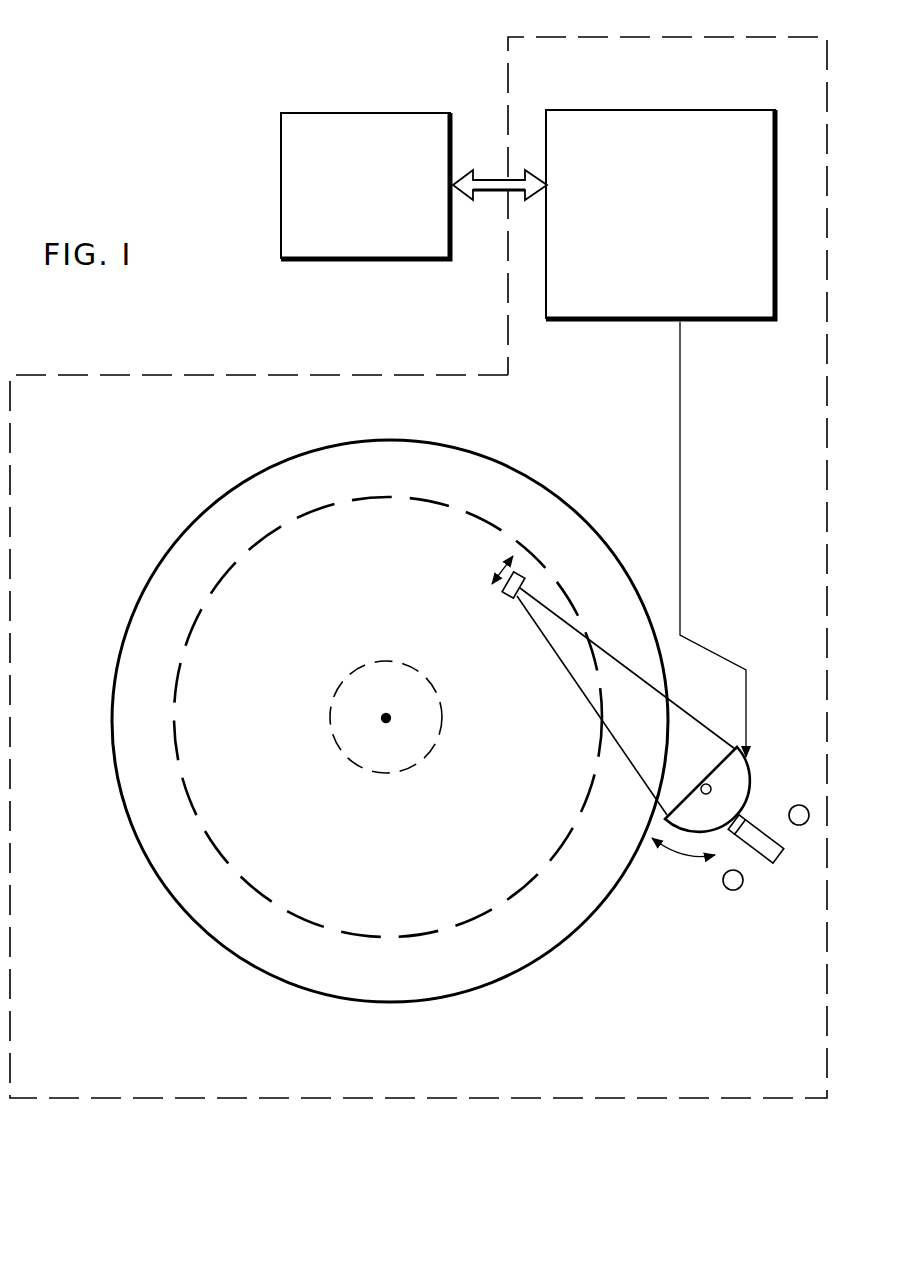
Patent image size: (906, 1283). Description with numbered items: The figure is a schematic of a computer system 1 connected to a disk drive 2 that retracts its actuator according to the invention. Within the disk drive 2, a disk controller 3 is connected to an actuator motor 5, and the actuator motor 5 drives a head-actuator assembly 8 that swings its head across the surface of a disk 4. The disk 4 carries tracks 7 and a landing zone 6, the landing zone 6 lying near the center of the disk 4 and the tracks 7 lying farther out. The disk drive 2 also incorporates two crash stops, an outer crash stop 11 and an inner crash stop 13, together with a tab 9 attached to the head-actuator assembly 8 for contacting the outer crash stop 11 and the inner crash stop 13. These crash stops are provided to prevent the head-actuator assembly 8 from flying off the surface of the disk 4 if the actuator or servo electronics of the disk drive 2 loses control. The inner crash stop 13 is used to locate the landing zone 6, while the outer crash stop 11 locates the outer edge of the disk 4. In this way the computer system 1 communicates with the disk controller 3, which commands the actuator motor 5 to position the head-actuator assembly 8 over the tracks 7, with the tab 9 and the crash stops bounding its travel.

The computer system 1 is at (380, 113).
The disk drive 2 is at (572, 37).
The disk controller 3 is at (708, 110).
The disk 4 is at (503, 485).
The actuator motor 5 is at (752, 789).
The landing zone 6 is at (358, 724).
The tracks 7 is at (429, 939).
The head-actuator assembly 8 is at (616, 658).
The tab 9 is at (782, 858).
The outer crash stop 11 is at (738, 890).
The inner crash stop 13 is at (791, 807).